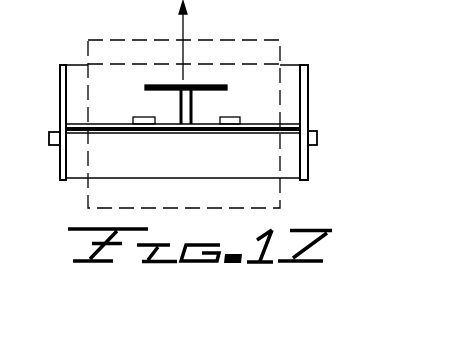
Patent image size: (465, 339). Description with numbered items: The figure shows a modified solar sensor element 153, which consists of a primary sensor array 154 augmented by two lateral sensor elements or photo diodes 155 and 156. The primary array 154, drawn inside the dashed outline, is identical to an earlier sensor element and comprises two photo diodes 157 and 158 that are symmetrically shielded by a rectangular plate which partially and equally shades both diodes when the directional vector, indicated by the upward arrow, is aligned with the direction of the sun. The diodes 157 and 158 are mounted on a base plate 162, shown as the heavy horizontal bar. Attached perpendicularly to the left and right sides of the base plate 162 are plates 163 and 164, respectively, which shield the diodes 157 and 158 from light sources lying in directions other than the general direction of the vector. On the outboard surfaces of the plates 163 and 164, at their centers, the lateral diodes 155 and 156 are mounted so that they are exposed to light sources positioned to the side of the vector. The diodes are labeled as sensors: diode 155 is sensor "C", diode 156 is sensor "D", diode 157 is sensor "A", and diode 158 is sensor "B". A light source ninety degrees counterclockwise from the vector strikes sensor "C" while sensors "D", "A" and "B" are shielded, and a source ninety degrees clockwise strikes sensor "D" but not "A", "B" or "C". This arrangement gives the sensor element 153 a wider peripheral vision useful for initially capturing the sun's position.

The modified sensor element 153 is at (322, 77).
The primary sensor array 154 is at (217, 40).
The lateral sensor element or photo diode 155 is at (49, 132).
The lateral sensor element or photo diode 156 is at (317, 131).
The photo diode 157 is at (139, 117).
The photo diode 158 is at (235, 117).
The base plate 162 is at (115, 133).
The perpendicular plate 163 is at (60, 88).
The perpendicular plate 164 is at (309, 160).